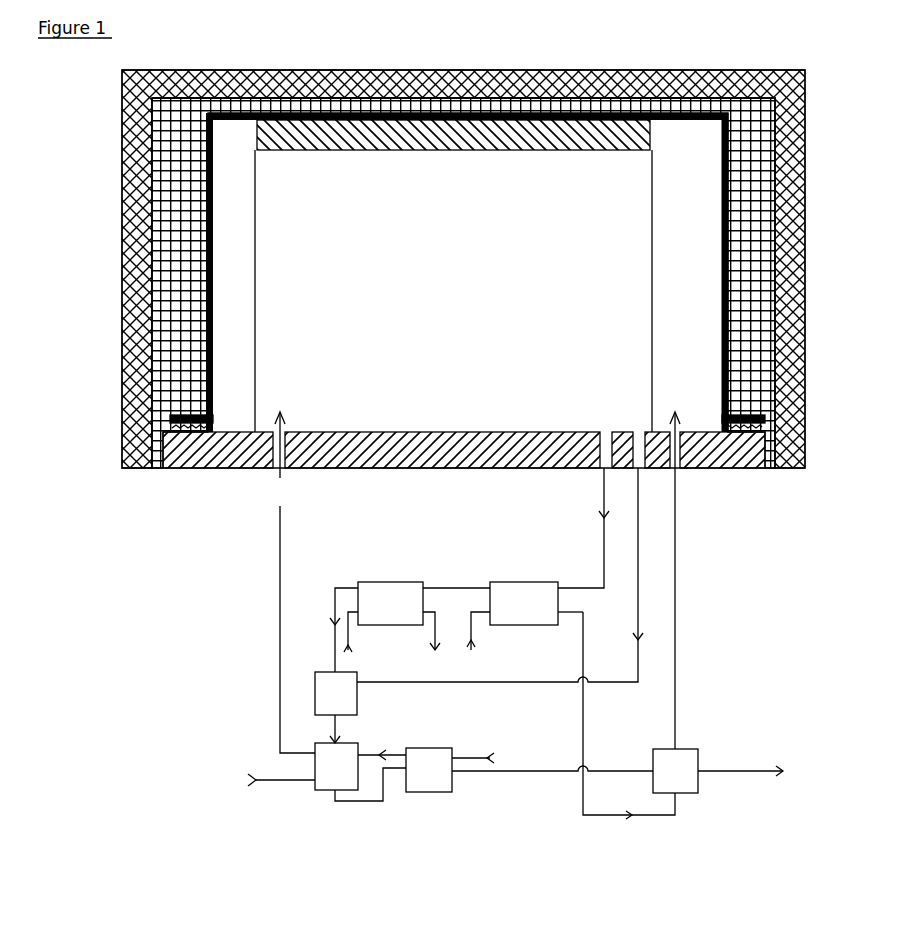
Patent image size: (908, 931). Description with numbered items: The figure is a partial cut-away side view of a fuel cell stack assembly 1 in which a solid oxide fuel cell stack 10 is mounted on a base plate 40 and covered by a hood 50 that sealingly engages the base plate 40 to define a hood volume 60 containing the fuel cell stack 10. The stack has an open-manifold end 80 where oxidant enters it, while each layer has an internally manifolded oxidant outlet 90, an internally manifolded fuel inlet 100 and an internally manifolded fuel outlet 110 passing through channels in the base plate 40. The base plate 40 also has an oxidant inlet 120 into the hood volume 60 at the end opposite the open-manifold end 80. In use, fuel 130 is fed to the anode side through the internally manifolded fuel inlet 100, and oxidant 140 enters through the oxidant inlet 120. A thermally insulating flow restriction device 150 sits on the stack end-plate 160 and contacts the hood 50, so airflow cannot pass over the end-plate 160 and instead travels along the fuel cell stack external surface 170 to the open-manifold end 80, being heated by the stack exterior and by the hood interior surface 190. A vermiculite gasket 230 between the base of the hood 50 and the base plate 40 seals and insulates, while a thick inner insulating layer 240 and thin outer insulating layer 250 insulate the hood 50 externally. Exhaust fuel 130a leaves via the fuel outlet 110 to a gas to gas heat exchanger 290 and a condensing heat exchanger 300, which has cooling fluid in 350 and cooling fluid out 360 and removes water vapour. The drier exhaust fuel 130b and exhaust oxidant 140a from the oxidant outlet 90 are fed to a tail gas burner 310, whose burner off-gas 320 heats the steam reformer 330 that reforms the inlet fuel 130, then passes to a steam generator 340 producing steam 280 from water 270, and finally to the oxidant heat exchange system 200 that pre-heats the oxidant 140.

The fuel cell stack assembly 1 is at (108, 106).
The solid oxide fuel cell stack 10 is at (635, 367).
The base plate 40 is at (411, 469).
The hood 50 is at (207, 240).
The hood volume 60 is at (232, 333).
The open-manifold end 80 is at (253, 370).
The internally manifolded oxidant outlet 90 is at (608, 468).
The internally manifolded fuel inlet 100 is at (262, 470).
The internally manifolded fuel outlet 110 is at (642, 468).
The oxidant inlet 120 is at (700, 468).
The fuel 130 is at (260, 599).
The exhaust fuel 130a is at (581, 528).
The drier exhaust fuel 130b is at (325, 630).
The oxidant (air) 140 is at (573, 626).
The exhaust oxidant 140a is at (500, 575).
The thermally insulating flow restriction device 150 is at (257, 136).
The fuel cell stack end-plate 160 is at (253, 203).
The fuel cell stack external surface 170 is at (300, 268).
The hood interior surface 190 is at (720, 356).
The oxidant heat exchange system 200 is at (675, 771).
The gas sealing thermally insulating vermiculite gasket 230 is at (165, 431).
The inner insulating layer 240 is at (764, 131).
The outer insulating layer 250 is at (787, 104).
The water 270 is at (487, 755).
The steam 280 is at (382, 747).
The gas to gas heat exchanger 290 is at (536, 603).
The condensing heat exchanger 300 is at (424, 603).
The tail gas burner 310 is at (336, 693).
The burner off-gas 320 is at (540, 757).
The steam reformer 330 is at (360, 772).
The steam generator 340 is at (529, 770).
The cooling fluid in 350 is at (360, 634).
The cooling fluid out 360 is at (422, 634).